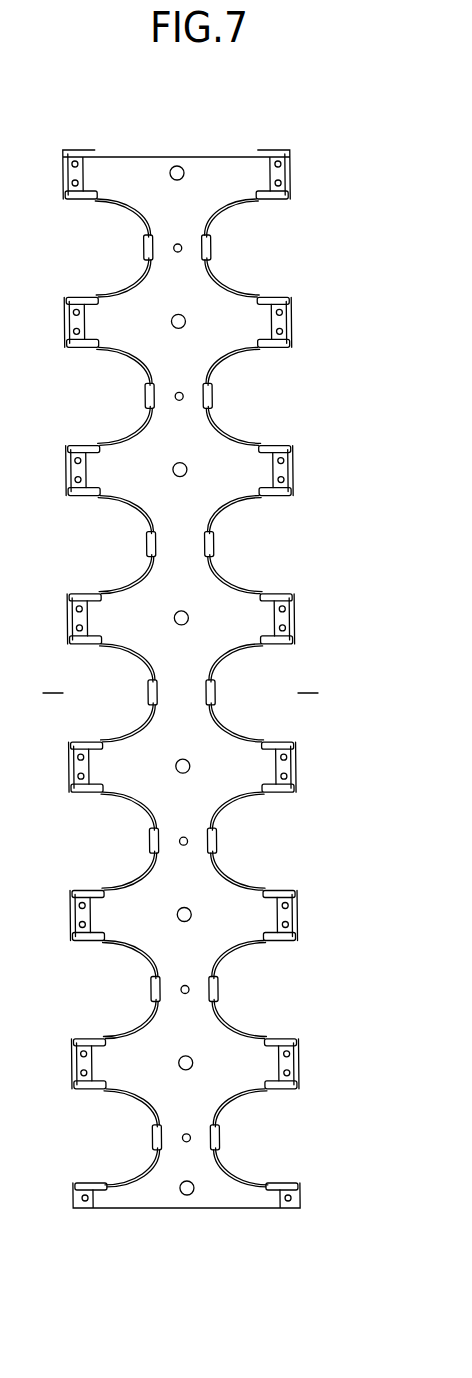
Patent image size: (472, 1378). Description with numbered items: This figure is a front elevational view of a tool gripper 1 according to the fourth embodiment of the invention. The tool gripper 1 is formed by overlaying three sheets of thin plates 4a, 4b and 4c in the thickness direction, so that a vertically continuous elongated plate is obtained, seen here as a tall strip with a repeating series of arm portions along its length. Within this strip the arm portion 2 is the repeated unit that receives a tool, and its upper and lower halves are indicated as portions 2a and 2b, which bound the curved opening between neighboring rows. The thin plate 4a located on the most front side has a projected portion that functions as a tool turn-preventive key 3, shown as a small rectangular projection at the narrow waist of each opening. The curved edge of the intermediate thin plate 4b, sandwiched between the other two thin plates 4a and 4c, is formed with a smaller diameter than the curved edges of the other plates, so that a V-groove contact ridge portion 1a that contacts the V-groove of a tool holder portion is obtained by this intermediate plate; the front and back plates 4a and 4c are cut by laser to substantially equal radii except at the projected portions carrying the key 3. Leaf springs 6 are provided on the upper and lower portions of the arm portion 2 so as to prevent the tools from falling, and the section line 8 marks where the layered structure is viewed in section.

The tool gripper 1 is at (231, 655).
The V-groove contact ridge portion 1a is at (315, 431).
The arm portion 2 is at (296, 246).
The upper link portion 2a is at (282, 219).
The lower link portion 2b is at (275, 278).
The tool turn-preventive key 3 is at (260, 391).
The thin plate 4a is at (275, 516).
The intermediate thin plate 4b is at (315, 431).
The thin plate 4c is at (275, 516).
The leaf spring 6 is at (316, 526).
The section line 8 is at (308, 700).